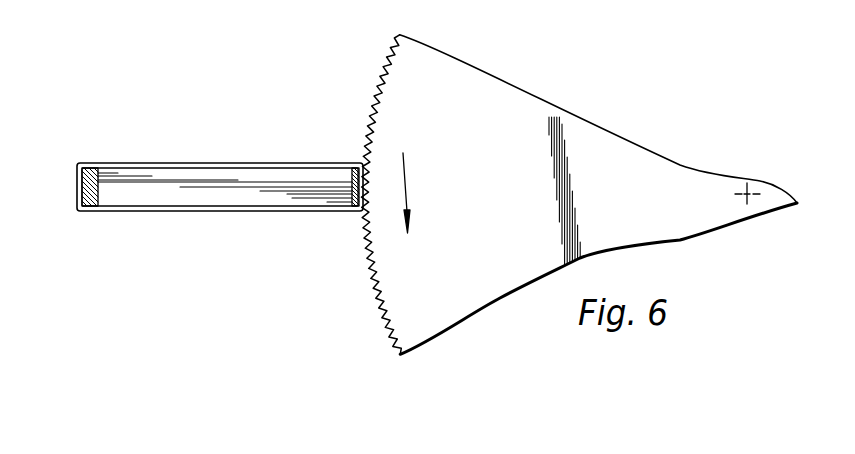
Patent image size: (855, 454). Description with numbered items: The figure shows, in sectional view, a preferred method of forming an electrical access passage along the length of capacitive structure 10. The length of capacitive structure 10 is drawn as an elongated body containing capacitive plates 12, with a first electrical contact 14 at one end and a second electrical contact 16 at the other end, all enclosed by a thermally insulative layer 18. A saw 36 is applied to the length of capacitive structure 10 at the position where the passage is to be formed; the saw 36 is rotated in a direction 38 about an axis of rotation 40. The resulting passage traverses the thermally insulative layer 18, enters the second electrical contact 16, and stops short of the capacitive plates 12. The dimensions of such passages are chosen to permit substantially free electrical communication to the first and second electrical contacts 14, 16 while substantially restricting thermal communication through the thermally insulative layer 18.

The length of capacitive structure 10 is at (157, 142).
The capacitive plates 12 is at (233, 190).
The first electrical contact 14 is at (82, 184).
The second electrical contact 16 is at (354, 207).
The thermally insulative layer 18 is at (244, 164).
The saw 36 is at (578, 128).
The direction 38 is at (418, 186).
The axis of rotation 40 is at (741, 178).